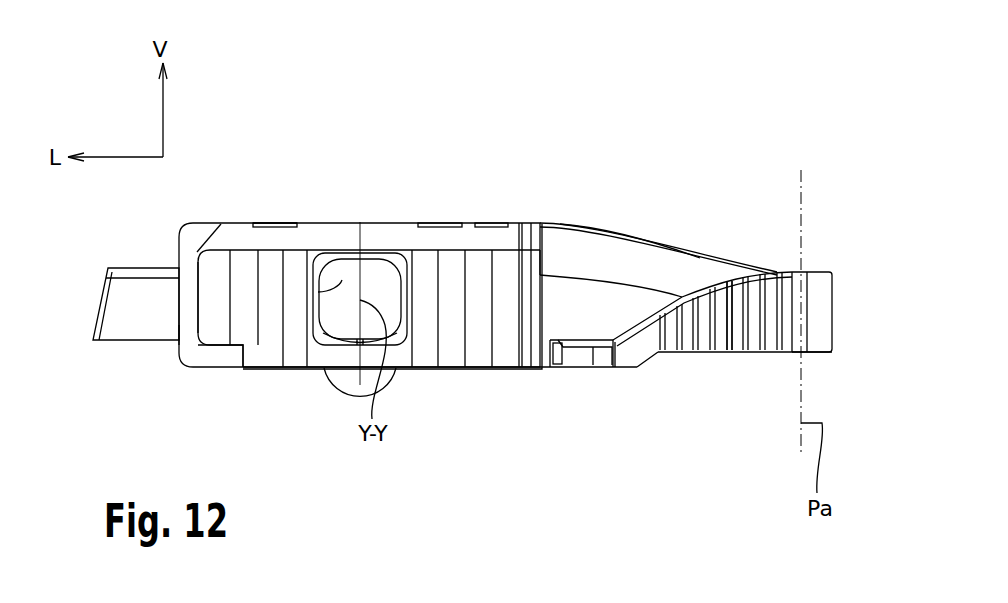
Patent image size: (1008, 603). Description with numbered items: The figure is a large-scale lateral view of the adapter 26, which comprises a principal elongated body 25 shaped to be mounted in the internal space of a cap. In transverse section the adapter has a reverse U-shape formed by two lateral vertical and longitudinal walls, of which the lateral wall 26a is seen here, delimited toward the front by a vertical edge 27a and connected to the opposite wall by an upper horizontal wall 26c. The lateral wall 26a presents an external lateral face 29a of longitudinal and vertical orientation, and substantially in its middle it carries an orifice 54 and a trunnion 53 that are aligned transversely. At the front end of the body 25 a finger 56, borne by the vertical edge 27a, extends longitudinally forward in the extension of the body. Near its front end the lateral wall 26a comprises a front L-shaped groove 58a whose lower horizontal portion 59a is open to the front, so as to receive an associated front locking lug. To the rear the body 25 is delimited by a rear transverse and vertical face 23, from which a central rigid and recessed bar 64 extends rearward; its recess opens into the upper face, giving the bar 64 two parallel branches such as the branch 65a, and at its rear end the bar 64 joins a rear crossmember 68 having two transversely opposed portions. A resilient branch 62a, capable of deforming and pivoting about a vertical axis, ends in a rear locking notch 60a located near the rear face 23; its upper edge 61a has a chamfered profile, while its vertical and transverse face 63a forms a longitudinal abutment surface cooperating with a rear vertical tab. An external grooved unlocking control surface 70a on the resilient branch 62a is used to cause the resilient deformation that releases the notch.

The rear transverse and vertical face 23 is at (540, 265).
The principal elongated body 25 is at (433, 222).
The adapter 26 is at (710, 230).
The lateral vertical and longitudinal wall 26a is at (298, 372).
The upper horizontal wall 26c is at (282, 223).
The vertical edge 27a is at (178, 326).
The external lateral face 29a is at (215, 280).
The trunnion 53 is at (378, 285).
The orifice 54 is at (342, 280).
The finger 56 is at (118, 312).
The front L-shaped groove 58a is at (183, 308).
The lower horizontal portion 59a is at (218, 357).
The rear locking notch 60a is at (606, 373).
The upper edge of rear locking notch 61a is at (599, 366).
The resilient branch 62a is at (748, 358).
The vertical and transverse face 63a is at (583, 360).
The central rigid and recessed bar 64 is at (627, 263).
The branch of the bar 65a is at (590, 252).
The rear crossmember 68 is at (832, 305).
The external grooved unlocking control surface 70a is at (727, 335).